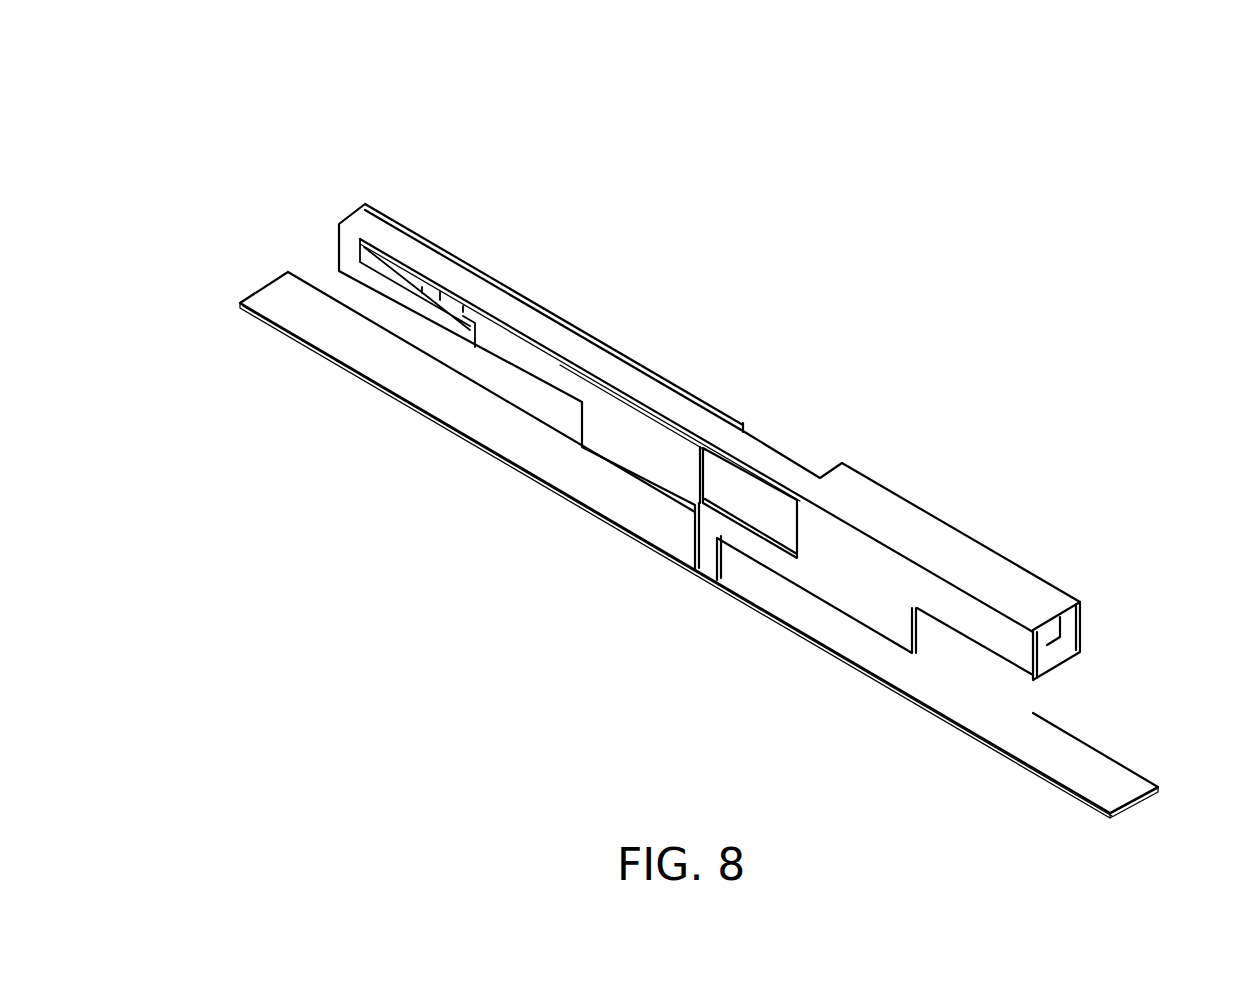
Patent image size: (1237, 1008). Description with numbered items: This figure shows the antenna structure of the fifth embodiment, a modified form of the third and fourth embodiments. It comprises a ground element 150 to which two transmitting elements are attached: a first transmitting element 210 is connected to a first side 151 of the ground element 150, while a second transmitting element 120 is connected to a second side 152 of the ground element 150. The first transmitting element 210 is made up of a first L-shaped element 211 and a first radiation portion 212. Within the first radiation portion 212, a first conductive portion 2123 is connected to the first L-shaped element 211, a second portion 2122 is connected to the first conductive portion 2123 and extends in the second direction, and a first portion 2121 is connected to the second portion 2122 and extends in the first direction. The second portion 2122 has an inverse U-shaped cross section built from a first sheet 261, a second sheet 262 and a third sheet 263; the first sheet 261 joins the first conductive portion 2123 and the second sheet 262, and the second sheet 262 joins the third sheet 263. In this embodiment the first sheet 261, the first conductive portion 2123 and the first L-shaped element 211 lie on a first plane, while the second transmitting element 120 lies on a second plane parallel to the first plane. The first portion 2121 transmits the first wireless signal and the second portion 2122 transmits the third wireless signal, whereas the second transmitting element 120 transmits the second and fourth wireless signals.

The second transmitting element 120 is at (635, 470).
The ground element 150 is at (1057, 748).
The first side 151 is at (1055, 788).
The second side 152 is at (1118, 758).
The first transmitting element 210 is at (717, 413).
The first L-shaped element 211 is at (705, 523).
The first radiation portion 212 is at (1072, 423).
The first portion 2121 is at (805, 483).
The second portion 2122 is at (1092, 508).
The first conductive portion 2123 is at (887, 617).
The first sheet 261 is at (953, 605).
The second sheet 262 is at (1005, 588).
The third sheet 263 is at (1065, 630).